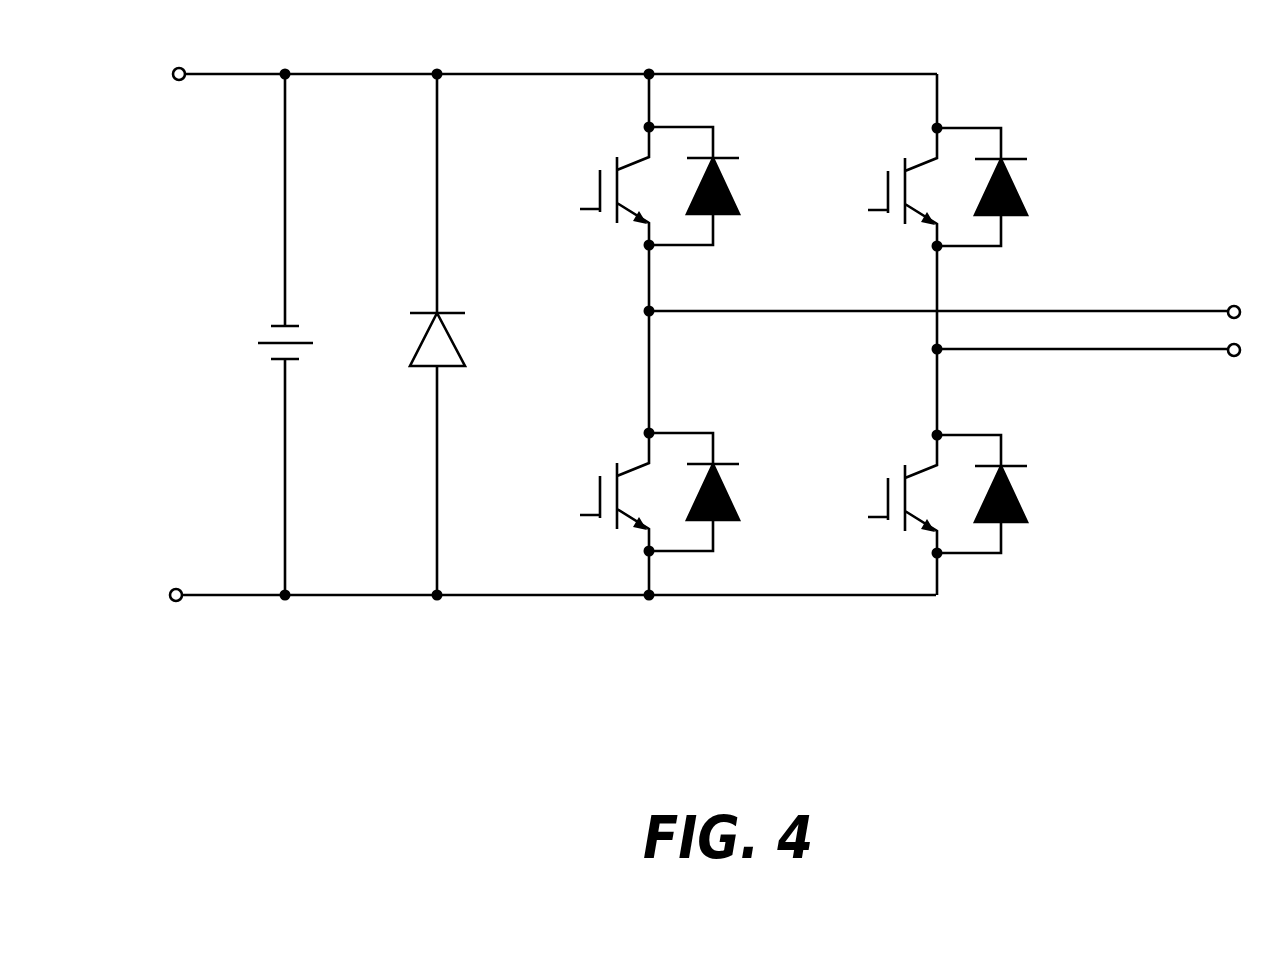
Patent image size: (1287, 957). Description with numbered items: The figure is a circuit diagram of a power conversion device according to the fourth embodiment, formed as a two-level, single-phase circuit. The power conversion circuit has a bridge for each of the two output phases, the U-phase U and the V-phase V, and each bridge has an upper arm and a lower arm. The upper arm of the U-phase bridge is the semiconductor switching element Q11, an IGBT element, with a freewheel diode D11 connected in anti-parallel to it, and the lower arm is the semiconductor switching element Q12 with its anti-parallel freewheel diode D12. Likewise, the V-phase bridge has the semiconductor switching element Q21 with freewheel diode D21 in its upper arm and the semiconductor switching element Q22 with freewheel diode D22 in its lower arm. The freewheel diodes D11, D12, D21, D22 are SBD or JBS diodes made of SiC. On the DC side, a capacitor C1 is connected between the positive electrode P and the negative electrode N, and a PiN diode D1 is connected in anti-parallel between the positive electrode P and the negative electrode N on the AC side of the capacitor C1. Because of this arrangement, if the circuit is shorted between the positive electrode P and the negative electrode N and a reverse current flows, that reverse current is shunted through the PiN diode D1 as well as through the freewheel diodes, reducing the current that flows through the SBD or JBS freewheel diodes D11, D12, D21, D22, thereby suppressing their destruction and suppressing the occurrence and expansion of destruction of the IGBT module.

The positive electrode P is at (539, 74).
The negative electrode N is at (536, 597).
The U-phase U is at (962, 311).
The V-phase V is at (1107, 357).
The capacitor C1 is at (273, 334).
The PiN diode D1 is at (414, 334).
The semiconductor switching element Q11 is at (588, 186).
The freewheel diode D11 is at (728, 186).
The semiconductor switching element Q21 is at (882, 186).
The freewheel diode D21 is at (1015, 186).
The semiconductor switching element Q12 is at (595, 486).
The freewheel diode D12 is at (728, 486).
The semiconductor switching element Q22 is at (891, 487).
The freewheel diode D22 is at (1015, 477).